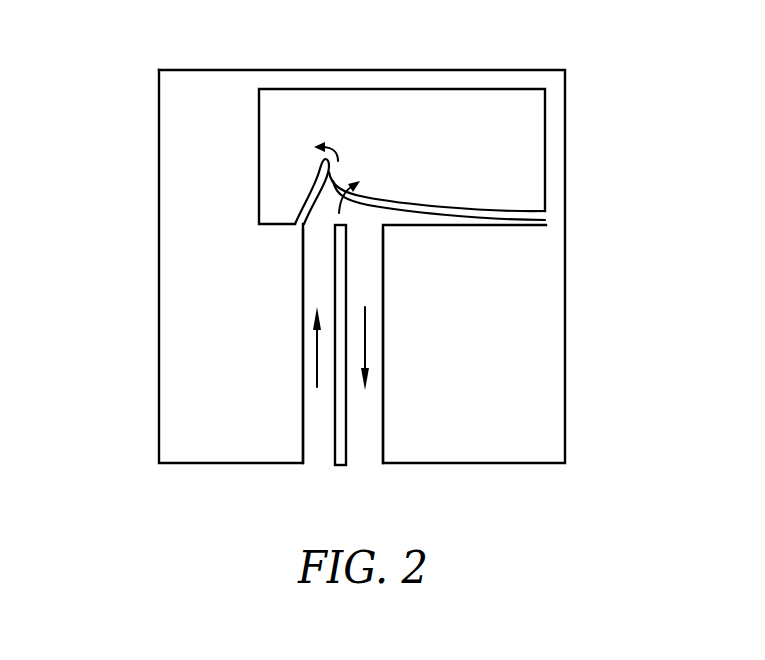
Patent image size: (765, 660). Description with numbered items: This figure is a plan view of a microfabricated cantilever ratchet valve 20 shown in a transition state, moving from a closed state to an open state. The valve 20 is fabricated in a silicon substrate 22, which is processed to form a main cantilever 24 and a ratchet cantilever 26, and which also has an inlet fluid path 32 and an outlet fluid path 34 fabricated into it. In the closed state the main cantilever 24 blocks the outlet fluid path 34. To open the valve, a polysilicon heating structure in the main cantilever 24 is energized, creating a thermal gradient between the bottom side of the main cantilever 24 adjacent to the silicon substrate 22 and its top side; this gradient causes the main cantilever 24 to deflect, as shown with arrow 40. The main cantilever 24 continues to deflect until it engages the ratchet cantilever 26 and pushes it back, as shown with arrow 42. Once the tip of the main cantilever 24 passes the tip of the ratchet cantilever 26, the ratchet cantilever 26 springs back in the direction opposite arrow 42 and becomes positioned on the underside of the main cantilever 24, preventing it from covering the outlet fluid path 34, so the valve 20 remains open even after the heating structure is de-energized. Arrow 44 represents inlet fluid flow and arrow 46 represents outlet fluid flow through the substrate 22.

The microfabricated cantilever ratchet valve 20 is at (121, 117).
The silicon substrate 22 is at (556, 253).
The main cantilever 24 is at (478, 178).
The ratchet cantilever 26 is at (500, 100).
The inlet fluid path 32 is at (313, 458).
The outlet fluid path 34 is at (371, 460).
The arrow 40 is at (356, 195).
The arrow 42 is at (336, 152).
The arrow 44 is at (318, 385).
The arrow 46 is at (365, 316).